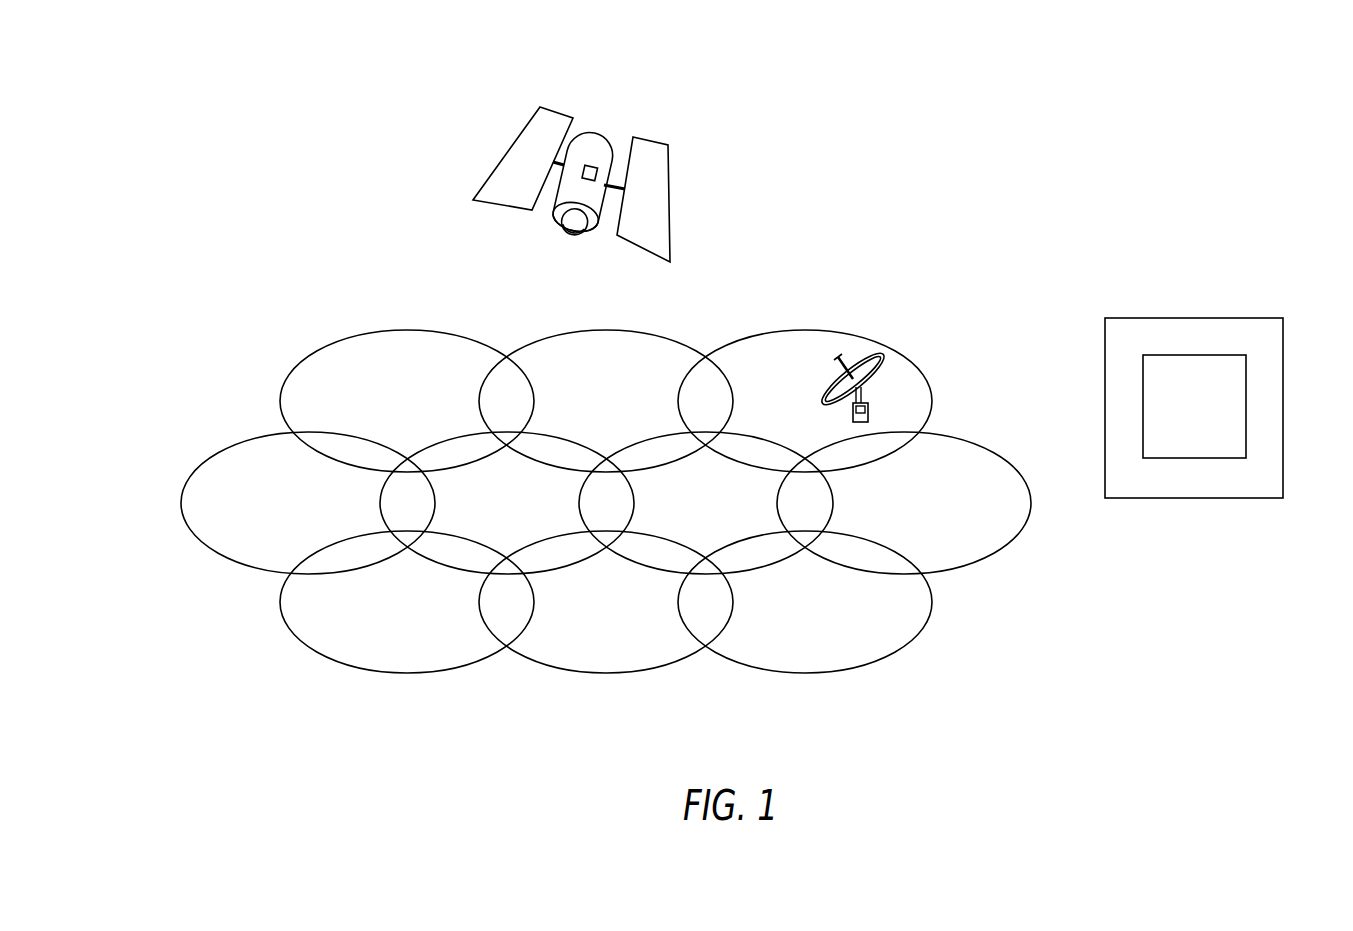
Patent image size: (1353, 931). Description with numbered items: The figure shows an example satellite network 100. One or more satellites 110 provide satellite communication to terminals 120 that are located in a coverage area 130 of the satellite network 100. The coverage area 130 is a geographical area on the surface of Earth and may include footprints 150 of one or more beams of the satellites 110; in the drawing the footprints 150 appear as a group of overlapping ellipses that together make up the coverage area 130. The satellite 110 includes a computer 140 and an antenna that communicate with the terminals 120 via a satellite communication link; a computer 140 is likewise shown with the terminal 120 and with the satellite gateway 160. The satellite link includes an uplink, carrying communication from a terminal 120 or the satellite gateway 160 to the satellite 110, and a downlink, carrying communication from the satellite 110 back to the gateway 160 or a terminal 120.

The satellite network 100 is at (1086, 117).
The satellite 110 is at (553, 226).
The terminal 120 is at (884, 350).
The coverage area 130 is at (295, 323).
The computer 140 is at (588, 165).
The footprint 150 is at (837, 330).
The satellite gateway 160 is at (1253, 318).